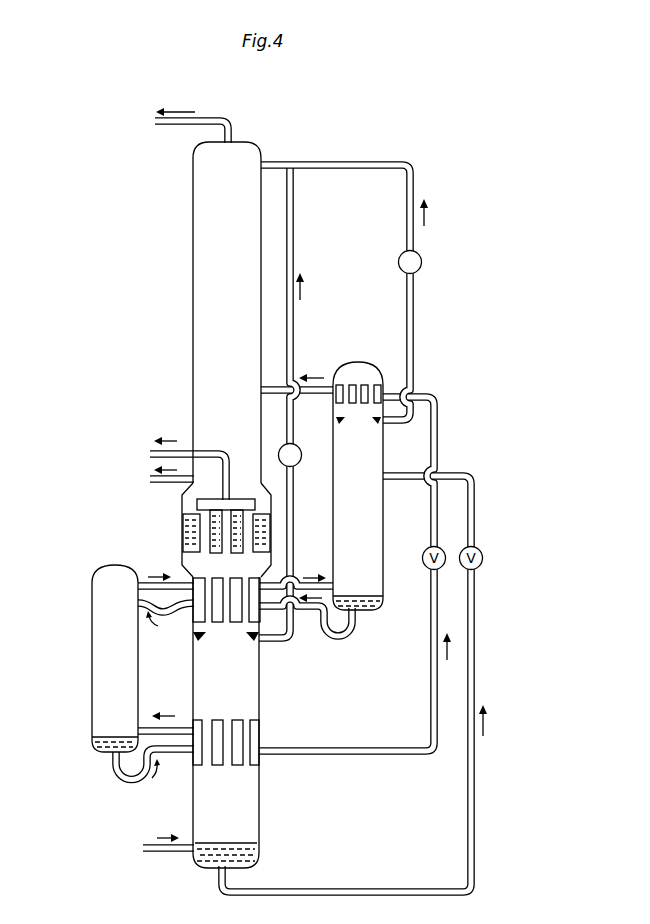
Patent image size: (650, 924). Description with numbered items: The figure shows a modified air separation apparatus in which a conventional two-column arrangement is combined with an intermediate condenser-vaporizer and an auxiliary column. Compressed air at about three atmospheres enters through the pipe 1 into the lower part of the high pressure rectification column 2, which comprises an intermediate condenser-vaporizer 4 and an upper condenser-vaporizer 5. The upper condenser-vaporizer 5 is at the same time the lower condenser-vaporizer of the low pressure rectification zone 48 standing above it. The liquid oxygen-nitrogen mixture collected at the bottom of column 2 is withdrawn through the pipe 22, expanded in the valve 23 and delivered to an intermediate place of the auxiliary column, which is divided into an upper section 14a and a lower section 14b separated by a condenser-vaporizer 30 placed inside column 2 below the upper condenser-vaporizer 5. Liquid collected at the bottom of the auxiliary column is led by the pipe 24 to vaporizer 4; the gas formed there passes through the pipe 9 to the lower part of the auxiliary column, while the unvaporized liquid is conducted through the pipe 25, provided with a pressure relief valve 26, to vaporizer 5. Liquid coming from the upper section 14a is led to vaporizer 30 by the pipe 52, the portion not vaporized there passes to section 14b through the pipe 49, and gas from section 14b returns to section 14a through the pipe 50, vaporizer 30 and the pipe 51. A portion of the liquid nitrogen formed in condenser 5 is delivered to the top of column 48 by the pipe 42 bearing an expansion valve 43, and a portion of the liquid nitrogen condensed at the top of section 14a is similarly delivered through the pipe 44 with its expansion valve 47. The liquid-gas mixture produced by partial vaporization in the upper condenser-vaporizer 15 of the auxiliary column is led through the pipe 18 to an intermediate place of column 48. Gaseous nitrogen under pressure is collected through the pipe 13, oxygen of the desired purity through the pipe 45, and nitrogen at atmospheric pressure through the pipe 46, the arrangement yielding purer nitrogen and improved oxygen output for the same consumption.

The pipe 1 is at (154, 852).
The rectification column 2 is at (192, 806).
The intermediate condenser-vaporizer 4 is at (254, 731).
The upper condenser-vaporizer 5 is at (182, 535).
The pipe 9 is at (149, 729).
The pipe 13 is at (155, 452).
The upper section of auxiliary column 14a is at (383, 526).
The lower section of auxiliary column 14b is at (92, 683).
The upper condenser-vaporizer 15 is at (385, 391).
The pipe 18 is at (315, 393).
The pipe 22 is at (333, 888).
The valve 23 is at (483, 566).
The pipe 24 is at (126, 785).
The pipe 25 is at (342, 746).
The pressure relief valve 26 is at (424, 569).
The condenser-vaporizer 30 is at (258, 622).
The pipe 42 is at (295, 334).
The expansion valve 43 is at (298, 462).
The pipe 44 is at (416, 322).
The pipe 45 is at (150, 484).
The pipe 46 is at (188, 126).
The expansion valve 47 is at (423, 260).
The low pressure rectification zone 48 is at (193, 341).
The pipe 49 is at (171, 617).
The pipe 50 is at (150, 580).
The pipe 51 is at (330, 583).
The pipe 52 is at (336, 641).